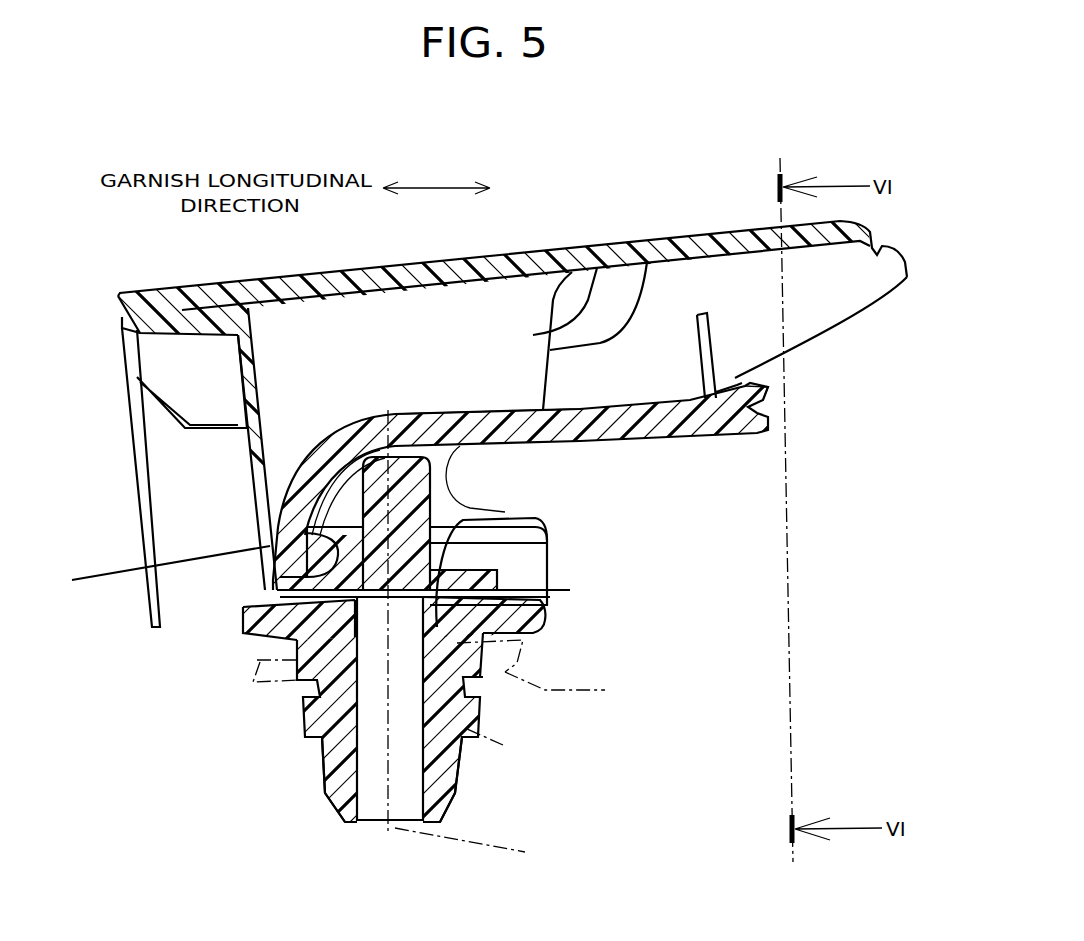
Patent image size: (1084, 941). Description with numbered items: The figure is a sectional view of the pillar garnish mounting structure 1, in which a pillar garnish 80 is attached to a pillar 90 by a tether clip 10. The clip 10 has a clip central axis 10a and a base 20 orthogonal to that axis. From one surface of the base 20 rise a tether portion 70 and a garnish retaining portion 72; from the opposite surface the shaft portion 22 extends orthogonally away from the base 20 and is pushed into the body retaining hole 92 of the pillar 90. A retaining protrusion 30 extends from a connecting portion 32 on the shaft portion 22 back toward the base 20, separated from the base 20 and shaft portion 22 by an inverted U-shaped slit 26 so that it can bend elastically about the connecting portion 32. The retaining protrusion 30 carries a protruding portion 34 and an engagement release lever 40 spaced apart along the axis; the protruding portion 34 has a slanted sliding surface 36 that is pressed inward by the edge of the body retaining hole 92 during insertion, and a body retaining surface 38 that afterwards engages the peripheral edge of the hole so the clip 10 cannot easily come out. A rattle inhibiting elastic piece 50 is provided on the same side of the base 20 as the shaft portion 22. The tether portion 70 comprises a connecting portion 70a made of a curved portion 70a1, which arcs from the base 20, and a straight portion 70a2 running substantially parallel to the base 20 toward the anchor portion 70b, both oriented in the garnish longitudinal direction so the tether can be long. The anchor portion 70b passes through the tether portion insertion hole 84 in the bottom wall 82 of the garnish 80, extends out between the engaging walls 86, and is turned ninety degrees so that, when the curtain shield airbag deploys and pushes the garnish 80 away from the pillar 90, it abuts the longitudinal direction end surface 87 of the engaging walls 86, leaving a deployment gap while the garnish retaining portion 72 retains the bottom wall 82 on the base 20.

The pillar garnish mounting structure 1 is at (545, 545).
The clip 10 is at (542, 470).
The clip central axis 10a is at (479, 847).
The base 20 is at (542, 470).
The shaft portion 22 is at (333, 797).
The slit 26 is at (560, 613).
The retaining protrusion 30 is at (542, 470).
The connecting portion 32 is at (325, 778).
The protruding portion 34 is at (304, 697).
The sliding surface 36 is at (330, 717).
The body retaining surface 38 is at (297, 681).
The engagement release lever 40 is at (240, 620).
The rattle inhibiting elastic piece 50 is at (257, 660).
The tether portion 70 is at (542, 470).
The connecting portion 70a is at (292, 545).
The curved portion 70a1 is at (368, 412).
The straight portion 70a2 is at (650, 430).
The anchor portion 70b is at (747, 370).
The garnish retaining portion 72 is at (415, 496).
The pillar garnish 80 is at (527, 240).
The bottom wall 82 is at (540, 553).
The tether portion insertion hole 84 is at (312, 408).
The engaging walls 86 is at (590, 290).
The pillar garnish longitudinal direction end surface 87 is at (645, 262).
The pillar 90 is at (580, 688).
The body retaining hole 92 is at (535, 757).